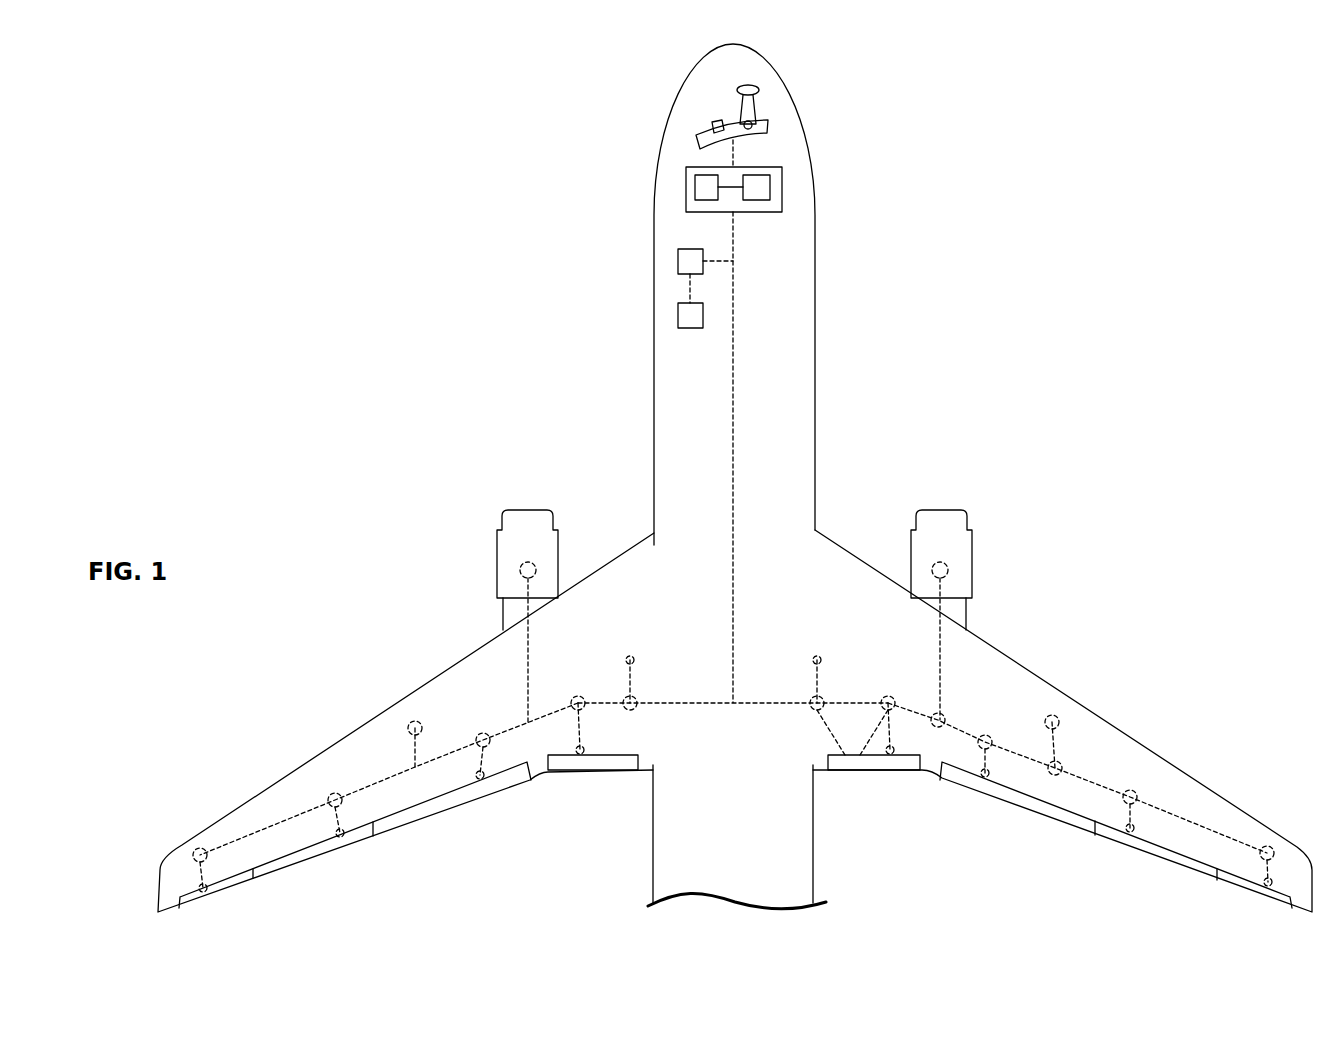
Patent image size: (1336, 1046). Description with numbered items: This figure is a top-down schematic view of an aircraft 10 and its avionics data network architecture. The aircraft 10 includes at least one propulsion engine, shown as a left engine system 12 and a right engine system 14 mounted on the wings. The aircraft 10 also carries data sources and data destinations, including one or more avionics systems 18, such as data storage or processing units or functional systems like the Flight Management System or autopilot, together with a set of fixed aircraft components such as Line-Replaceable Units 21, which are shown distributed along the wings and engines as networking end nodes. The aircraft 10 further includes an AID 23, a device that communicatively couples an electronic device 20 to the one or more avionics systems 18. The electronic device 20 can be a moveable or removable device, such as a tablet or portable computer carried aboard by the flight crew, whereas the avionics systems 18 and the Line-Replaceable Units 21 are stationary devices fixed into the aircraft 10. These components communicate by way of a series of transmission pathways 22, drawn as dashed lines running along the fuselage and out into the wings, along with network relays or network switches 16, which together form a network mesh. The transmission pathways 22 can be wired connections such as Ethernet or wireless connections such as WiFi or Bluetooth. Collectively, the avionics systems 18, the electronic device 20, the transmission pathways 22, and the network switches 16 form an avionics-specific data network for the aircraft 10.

The aircraft 10 is at (542, 78).
The left engine system 12 is at (525, 522).
The right engine system 14 is at (960, 522).
The network switches 16 is at (575, 710).
The avionics systems 18 is at (698, 204).
The electronic device 20 is at (678, 314).
The Line-Replaceable Units 21 is at (538, 568).
The transmission pathways 22 is at (733, 520).
The AID 23 is at (678, 262).